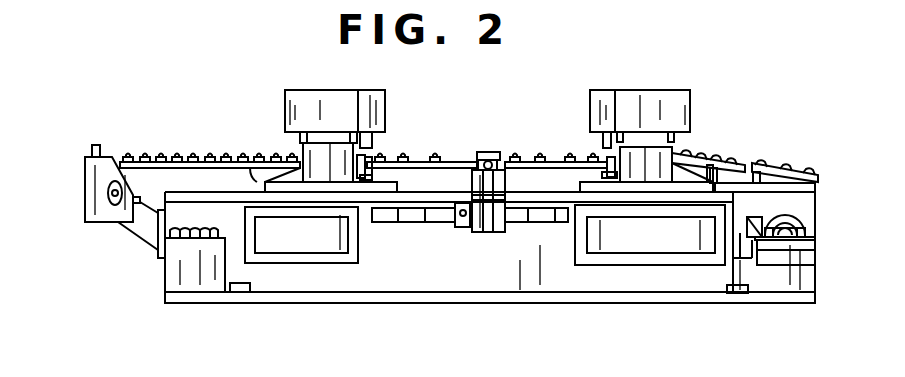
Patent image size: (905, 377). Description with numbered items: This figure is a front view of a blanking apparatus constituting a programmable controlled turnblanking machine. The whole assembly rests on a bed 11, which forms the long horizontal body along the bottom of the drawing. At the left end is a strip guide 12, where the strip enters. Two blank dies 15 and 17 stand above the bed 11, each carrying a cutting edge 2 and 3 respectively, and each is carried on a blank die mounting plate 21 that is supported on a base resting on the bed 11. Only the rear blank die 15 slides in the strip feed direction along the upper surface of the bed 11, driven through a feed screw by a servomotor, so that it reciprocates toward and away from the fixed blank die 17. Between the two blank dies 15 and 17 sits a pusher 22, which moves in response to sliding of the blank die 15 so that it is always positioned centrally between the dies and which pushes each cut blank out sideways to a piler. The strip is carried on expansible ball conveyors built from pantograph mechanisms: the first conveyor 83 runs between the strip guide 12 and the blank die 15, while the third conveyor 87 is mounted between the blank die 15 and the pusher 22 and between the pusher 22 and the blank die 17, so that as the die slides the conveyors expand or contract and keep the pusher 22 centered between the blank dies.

The cutting edge 2 is at (365, 142).
The cutting edge 3 is at (372, 168).
The bed 11 is at (205, 297).
The strip guide 12 is at (97, 222).
The blank die 15 is at (300, 97).
The blank die 17 is at (668, 95).
The blank die mounting plate 21 is at (260, 188).
The pusher 22 is at (488, 152).
The first conveyor 83 is at (186, 156).
The third conveyor 87 is at (433, 160).